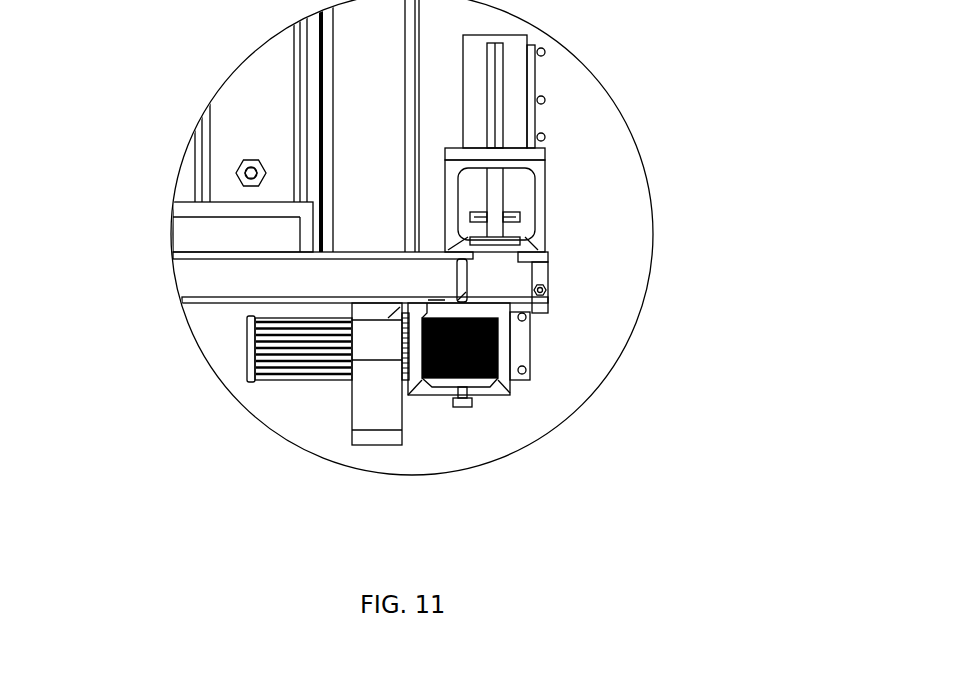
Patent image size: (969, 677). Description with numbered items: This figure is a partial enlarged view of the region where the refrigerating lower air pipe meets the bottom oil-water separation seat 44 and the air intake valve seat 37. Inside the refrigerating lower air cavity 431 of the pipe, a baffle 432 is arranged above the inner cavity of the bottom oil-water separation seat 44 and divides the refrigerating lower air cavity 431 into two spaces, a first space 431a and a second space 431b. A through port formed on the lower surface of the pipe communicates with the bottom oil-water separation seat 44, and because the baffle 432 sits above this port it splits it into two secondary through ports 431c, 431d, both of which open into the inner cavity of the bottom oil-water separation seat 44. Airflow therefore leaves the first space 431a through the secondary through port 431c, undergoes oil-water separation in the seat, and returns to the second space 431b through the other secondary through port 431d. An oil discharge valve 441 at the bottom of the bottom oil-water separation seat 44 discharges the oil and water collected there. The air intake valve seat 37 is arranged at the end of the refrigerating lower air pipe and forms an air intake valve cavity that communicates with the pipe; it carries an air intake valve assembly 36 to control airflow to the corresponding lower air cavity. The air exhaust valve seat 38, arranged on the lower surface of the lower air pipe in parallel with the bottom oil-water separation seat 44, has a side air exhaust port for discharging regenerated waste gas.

The air intake valve assembly 36 is at (498, 220).
The air intake valve seat 37 is at (545, 207).
The air exhaust valve seat 38 is at (525, 352).
The bottom oil-water separation seat 44 is at (510, 393).
The oil discharge valve 441 is at (472, 405).
The refrigerating lower air cavity 431 is at (207, 278).
The first space 431a is at (430, 280).
The second space 431b is at (517, 268).
The secondary through port 431c is at (352, 302).
The secondary through port 431d is at (532, 313).
The baffle 432 is at (547, 292).